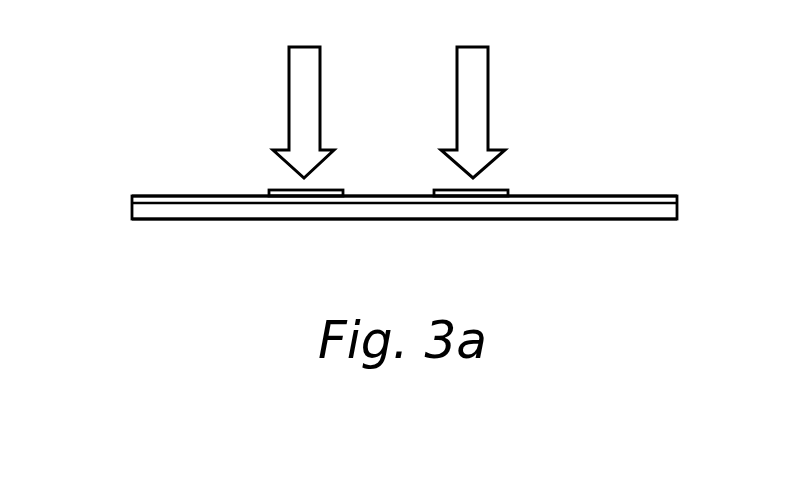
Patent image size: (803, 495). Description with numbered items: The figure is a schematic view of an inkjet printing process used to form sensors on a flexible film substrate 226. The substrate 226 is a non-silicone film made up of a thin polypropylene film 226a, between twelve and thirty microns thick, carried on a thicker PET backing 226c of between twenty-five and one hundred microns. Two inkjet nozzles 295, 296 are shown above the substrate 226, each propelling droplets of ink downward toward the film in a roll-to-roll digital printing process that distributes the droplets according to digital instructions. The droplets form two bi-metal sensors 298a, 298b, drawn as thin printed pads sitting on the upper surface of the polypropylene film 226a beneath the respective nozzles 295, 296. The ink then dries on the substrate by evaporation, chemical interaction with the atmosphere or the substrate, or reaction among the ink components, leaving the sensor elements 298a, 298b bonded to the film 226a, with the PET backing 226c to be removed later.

The flexible film substrate 226 is at (688, 193).
The polypropylene film 226a is at (132, 199).
The PET backing 226c is at (132, 212).
The nozzle 295 is at (289, 120).
The nozzle 296 is at (457, 120).
The bi-metal sensor 298a is at (282, 188).
The bi-metal sensor 298b is at (444, 188).